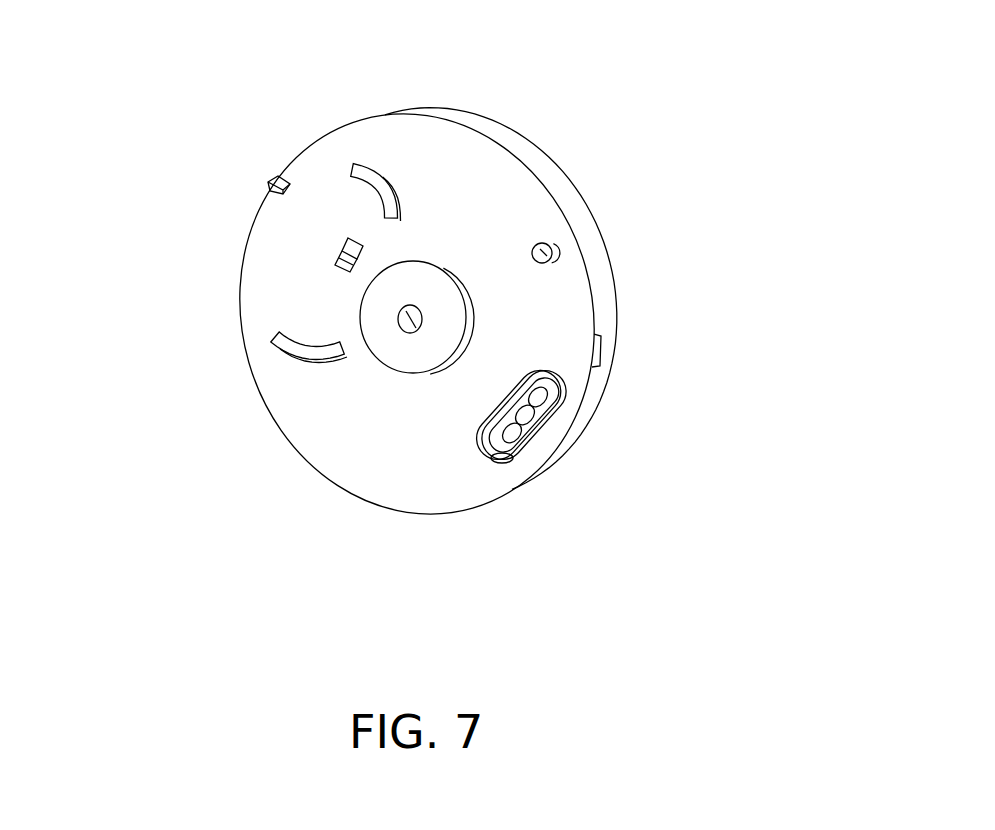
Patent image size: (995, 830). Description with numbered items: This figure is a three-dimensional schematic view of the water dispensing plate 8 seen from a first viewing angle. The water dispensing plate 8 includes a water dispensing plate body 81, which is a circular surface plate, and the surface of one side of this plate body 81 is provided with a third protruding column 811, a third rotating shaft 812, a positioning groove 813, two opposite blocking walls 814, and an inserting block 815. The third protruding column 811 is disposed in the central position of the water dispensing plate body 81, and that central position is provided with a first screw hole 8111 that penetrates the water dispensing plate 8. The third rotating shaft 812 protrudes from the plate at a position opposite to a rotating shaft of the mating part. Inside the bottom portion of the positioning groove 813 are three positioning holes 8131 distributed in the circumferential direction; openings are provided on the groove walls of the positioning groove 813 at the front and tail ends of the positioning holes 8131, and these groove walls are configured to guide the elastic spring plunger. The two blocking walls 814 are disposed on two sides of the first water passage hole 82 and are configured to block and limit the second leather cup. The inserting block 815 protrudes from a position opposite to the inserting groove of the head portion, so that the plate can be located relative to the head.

The water dispensing plate 8 is at (680, 102).
The water dispensing plate body 81 is at (600, 297).
The third protruding column 811 is at (402, 353).
The first screw hole 8111 is at (410, 320).
The third rotating shaft 812 is at (548, 252).
The positioning groove 813 is at (547, 437).
The positioning holes 8131 is at (514, 440).
The blocking walls 814 is at (348, 178).
The inserting block 815 is at (277, 182).
The first water passage hole 82 is at (360, 247).